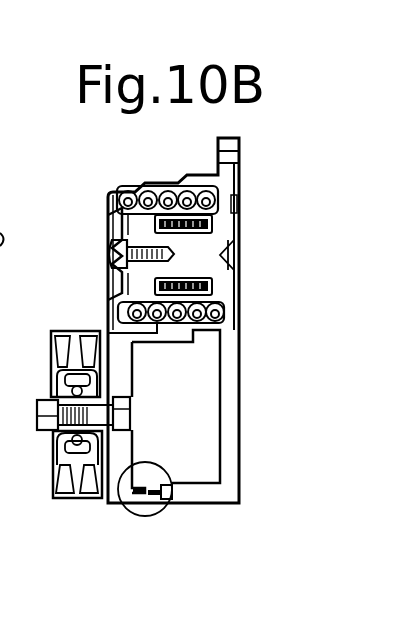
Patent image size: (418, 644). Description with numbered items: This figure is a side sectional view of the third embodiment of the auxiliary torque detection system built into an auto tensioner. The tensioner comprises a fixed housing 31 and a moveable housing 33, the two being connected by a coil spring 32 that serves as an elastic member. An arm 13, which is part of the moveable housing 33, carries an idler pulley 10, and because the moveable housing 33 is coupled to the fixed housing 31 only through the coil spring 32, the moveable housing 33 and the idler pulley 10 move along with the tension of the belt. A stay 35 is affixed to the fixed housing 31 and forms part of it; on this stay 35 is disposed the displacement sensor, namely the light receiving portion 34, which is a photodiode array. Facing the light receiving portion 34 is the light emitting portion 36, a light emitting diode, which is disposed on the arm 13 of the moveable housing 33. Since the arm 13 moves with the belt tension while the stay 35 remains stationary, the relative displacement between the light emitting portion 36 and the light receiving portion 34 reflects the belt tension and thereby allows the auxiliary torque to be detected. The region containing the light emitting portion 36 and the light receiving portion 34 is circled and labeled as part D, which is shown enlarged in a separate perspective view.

The idler pulley 10 is at (70, 360).
The arm 13 is at (117, 463).
The fixed housing 31 is at (200, 248).
The coil spring 32 is at (202, 183).
The moveable housing 33 is at (110, 208).
The light receiving portion 34 is at (156, 503).
The stay 35 is at (226, 496).
The light emitting portion 36 is at (138, 497).
The part D is at (122, 507).